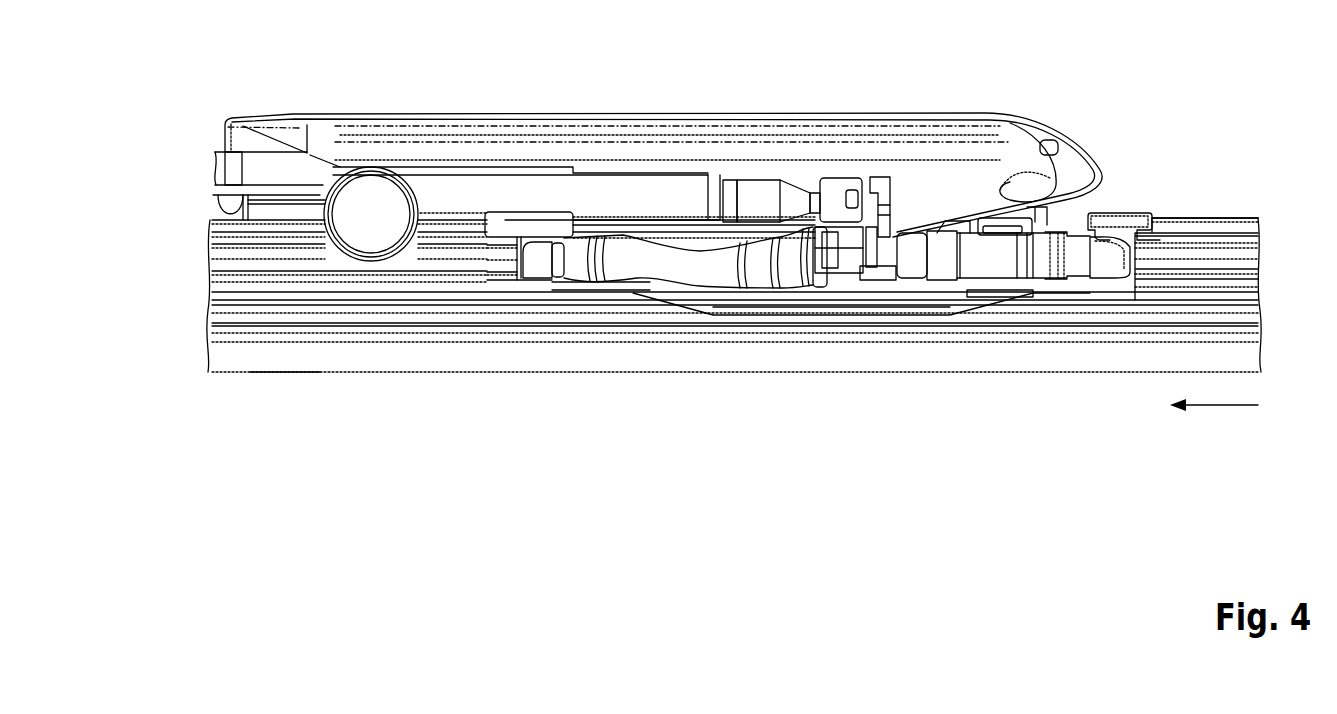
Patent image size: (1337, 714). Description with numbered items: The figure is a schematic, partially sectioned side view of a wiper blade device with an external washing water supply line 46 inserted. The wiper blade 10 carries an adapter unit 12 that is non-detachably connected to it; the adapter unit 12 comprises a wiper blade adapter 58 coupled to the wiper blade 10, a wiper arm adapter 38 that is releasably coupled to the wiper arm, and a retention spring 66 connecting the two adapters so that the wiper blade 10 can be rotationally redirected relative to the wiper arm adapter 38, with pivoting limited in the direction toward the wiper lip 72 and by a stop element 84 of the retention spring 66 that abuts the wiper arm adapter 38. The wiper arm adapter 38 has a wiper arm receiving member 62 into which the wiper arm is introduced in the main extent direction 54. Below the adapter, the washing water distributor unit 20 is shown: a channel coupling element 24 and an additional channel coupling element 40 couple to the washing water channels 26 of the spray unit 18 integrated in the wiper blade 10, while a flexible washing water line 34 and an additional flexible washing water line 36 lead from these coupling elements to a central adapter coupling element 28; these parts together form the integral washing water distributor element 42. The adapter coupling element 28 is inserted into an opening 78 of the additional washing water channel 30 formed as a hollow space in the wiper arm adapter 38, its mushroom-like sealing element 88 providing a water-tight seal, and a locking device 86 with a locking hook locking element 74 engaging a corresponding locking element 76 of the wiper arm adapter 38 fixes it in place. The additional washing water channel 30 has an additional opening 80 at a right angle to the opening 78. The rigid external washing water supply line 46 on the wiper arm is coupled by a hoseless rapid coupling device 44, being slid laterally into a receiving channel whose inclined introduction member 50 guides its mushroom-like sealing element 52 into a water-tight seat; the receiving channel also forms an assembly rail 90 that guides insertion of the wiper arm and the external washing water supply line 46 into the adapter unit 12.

The wiper blade 10 is at (707, 299).
The adapter unit 12 is at (615, 130).
The spray unit 18 is at (1252, 164).
The washing water distributor unit 20 is at (716, 440).
The channel coupling element 24 is at (1112, 270).
The washing water channel 26 is at (478, 275).
The adapter coupling element 28 is at (850, 290).
The additional washing water channel 30 is at (846, 180).
The flexible washing water line 34 is at (995, 263).
The additional flexible washing water line 36 is at (697, 270).
The wiper arm adapter 38 is at (644, 114).
The additional channel coupling element 40 is at (578, 268).
The washing water distributor element 42 is at (784, 335).
The rapid coupling device 44 is at (768, 170).
The external washing water supply line 46 is at (454, 185).
The inclined introduction member 50 is at (688, 190).
The sealing element 52 is at (752, 125).
The main extent direction 54 is at (1222, 407).
The wiper blade adapter 58 is at (877, 280).
The wiper arm receiving member 62 is at (214, 122).
The retention spring 66 is at (1050, 208).
The wiper lip 72 is at (283, 352).
The locking element 74 is at (892, 200).
The corresponding locking element 76 is at (867, 228).
The opening 78 is at (828, 236).
The additional opening 80 is at (748, 190).
The stop element 84 is at (1008, 225).
The locking device 86 is at (893, 180).
The sealing element 88 is at (838, 215).
The assembly rail 90 is at (630, 165).